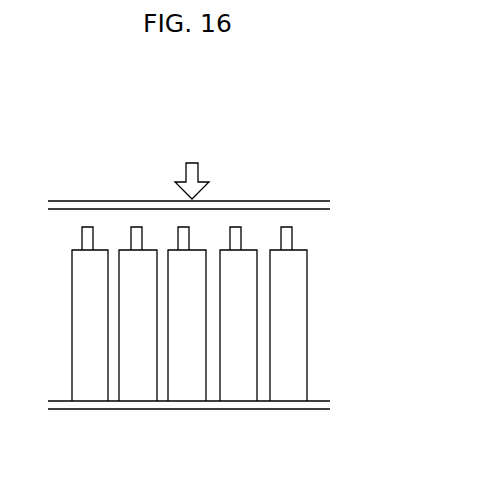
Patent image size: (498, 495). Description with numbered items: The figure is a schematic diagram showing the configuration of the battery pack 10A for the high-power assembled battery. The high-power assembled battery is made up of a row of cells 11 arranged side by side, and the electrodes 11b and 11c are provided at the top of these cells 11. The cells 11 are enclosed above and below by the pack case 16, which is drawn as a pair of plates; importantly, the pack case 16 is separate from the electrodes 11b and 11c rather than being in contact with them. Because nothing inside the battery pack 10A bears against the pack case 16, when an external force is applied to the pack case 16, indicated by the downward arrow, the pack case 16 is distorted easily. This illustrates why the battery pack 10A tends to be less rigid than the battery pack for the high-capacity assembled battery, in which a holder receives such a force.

The battery pack 10A is at (345, 182).
The cell 11 is at (102, 333).
The electrode 11b is at (92, 232).
The electrode 11c is at (138, 232).
The pack case 16 is at (247, 203).